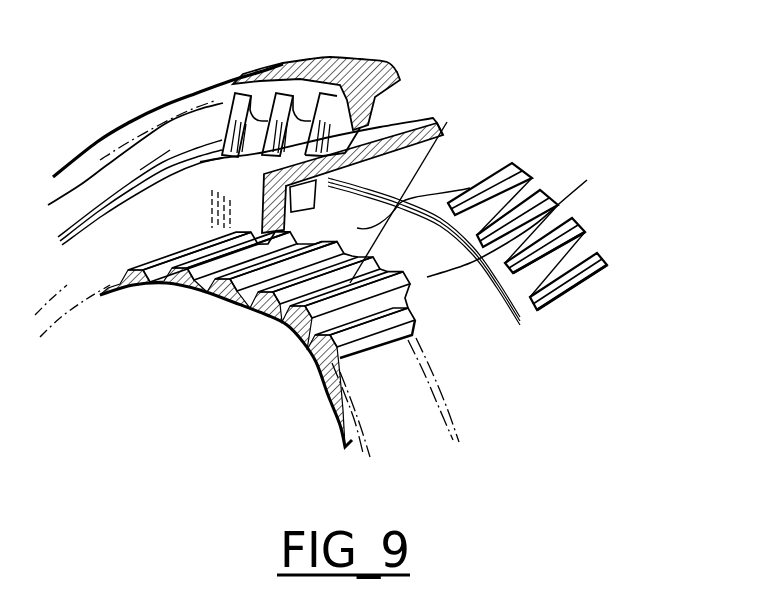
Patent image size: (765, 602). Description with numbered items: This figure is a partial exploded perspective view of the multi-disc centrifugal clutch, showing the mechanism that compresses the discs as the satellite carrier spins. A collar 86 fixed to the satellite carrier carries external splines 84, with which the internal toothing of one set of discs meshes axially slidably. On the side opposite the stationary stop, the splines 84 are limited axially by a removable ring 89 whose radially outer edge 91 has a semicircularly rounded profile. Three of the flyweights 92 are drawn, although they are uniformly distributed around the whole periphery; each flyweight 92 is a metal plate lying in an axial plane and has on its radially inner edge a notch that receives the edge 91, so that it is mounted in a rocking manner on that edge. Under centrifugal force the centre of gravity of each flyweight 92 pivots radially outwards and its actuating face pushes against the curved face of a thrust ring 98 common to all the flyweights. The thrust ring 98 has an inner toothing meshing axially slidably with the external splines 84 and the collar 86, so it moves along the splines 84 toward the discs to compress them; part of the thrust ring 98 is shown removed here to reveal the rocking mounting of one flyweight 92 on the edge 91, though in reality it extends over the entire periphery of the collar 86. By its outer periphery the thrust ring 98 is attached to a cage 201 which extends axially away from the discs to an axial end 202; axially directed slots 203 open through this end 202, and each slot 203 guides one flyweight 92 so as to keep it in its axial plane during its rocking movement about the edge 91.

The external splines 84 is at (234, 294).
The collar 86 is at (283, 338).
The removable ring 89 is at (430, 188).
The radially outer edge 91 is at (398, 196).
The flyweights 92 is at (234, 95).
The thrust ring 98 is at (552, 197).
The cage 201 is at (581, 217).
The axial end 202 is at (585, 233).
The slots 203 is at (607, 265).